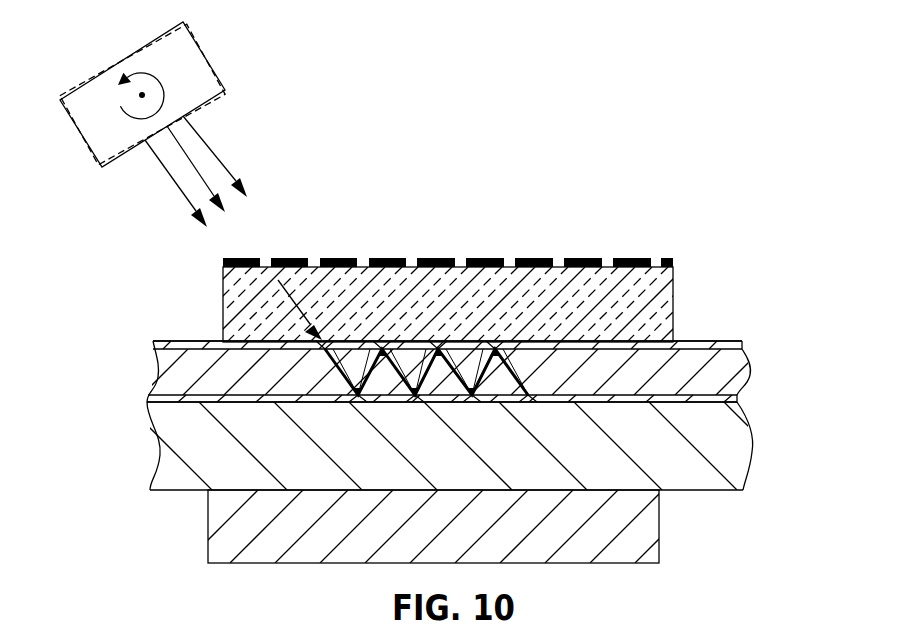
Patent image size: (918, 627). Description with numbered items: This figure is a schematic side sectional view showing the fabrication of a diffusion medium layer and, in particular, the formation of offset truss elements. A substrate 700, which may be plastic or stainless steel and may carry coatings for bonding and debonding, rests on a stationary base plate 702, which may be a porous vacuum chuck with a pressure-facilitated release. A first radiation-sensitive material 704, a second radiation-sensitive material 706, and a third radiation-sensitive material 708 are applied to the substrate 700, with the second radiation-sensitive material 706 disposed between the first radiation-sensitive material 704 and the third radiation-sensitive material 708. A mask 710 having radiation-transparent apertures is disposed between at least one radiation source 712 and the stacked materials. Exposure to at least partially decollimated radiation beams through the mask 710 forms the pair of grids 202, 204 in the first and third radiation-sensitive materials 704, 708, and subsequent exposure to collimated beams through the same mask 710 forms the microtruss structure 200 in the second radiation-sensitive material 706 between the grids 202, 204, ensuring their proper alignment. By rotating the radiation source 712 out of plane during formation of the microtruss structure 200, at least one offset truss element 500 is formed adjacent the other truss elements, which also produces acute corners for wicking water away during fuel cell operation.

The radiation source 712 is at (118, 64).
The offset truss element 500 is at (367, 341).
The mask 710 is at (673, 292).
The third radiation-sensitive material 708 is at (717, 341).
The second radiation-sensitive material 706 is at (748, 375).
The first radiation-sensitive material 704 is at (740, 397).
The substrate 700 is at (752, 450).
The stationary base plate 702 is at (659, 523).
The microtruss structure 200 is at (200, 372).
The grid 202 is at (283, 341).
The grid 204 is at (323, 402).